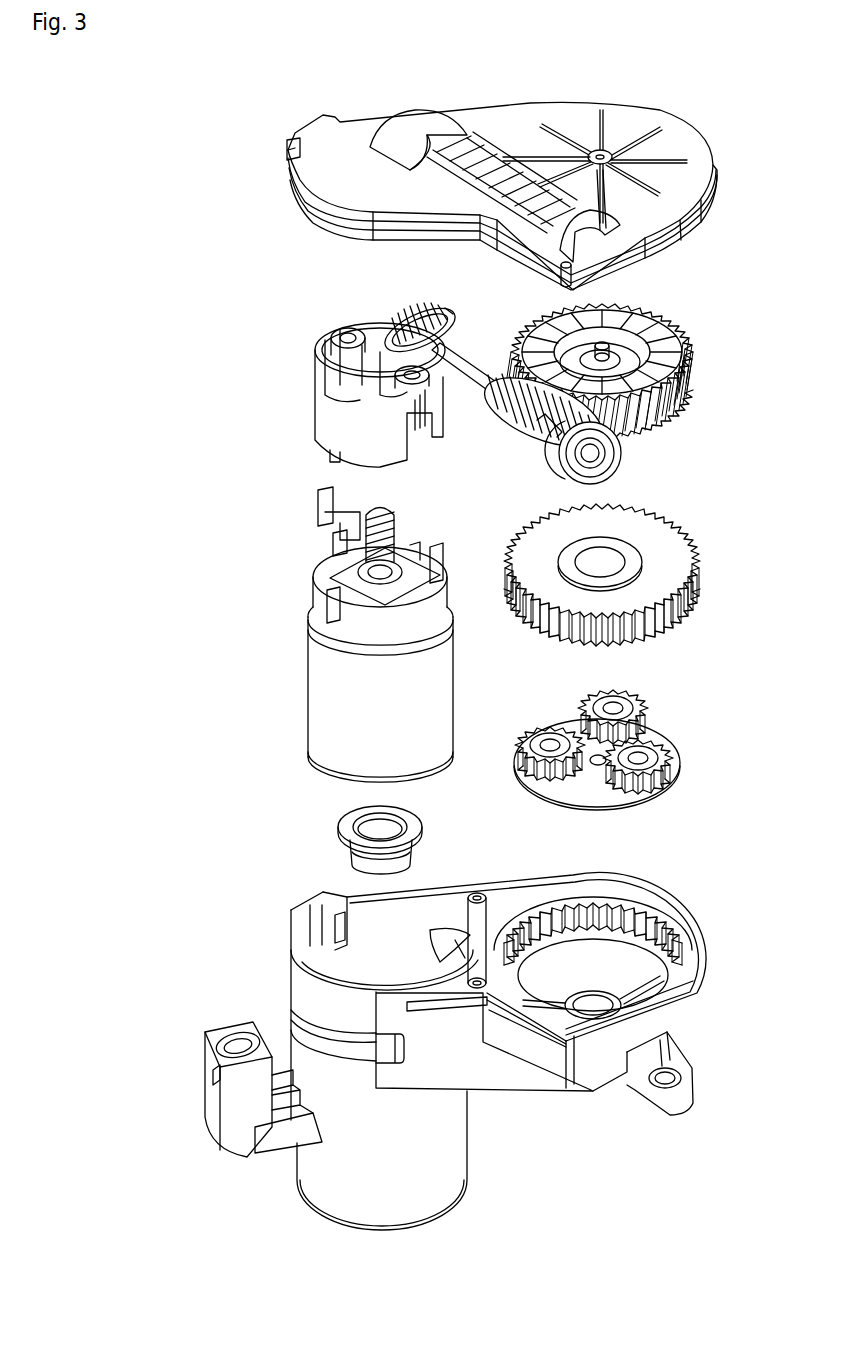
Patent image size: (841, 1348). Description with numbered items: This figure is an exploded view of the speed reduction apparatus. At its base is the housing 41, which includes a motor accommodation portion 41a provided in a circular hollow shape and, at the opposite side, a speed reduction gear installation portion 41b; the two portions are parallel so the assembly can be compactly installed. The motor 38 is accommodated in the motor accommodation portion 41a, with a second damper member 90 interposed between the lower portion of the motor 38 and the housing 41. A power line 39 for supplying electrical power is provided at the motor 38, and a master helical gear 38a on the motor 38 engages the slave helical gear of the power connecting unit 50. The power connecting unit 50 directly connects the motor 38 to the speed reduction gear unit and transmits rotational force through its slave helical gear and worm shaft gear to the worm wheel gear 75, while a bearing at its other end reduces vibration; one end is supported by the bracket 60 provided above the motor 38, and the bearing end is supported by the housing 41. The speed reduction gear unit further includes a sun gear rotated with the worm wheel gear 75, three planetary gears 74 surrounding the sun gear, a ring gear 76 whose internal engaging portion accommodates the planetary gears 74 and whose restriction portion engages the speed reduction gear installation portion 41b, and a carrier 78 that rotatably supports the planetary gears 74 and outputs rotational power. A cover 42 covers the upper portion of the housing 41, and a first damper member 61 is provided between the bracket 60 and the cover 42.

The cover 42 is at (368, 125).
The first damper member 61 is at (342, 330).
The bracket 60 is at (355, 371).
The power connecting unit 50 is at (497, 378).
The worm wheel gear 75 is at (690, 400).
The power line 39 is at (323, 520).
The master helical gear 38a is at (400, 513).
The motor 38 is at (359, 634).
The ring gear 76 is at (673, 553).
The carrier 78 is at (663, 738).
The planetary gears 74 is at (621, 750).
The second damper member 90 is at (347, 855).
The speed reduction gear installation portion 41b is at (667, 927).
The housing 41 is at (455, 1044).
The motor accommodation portion 41a is at (450, 1147).